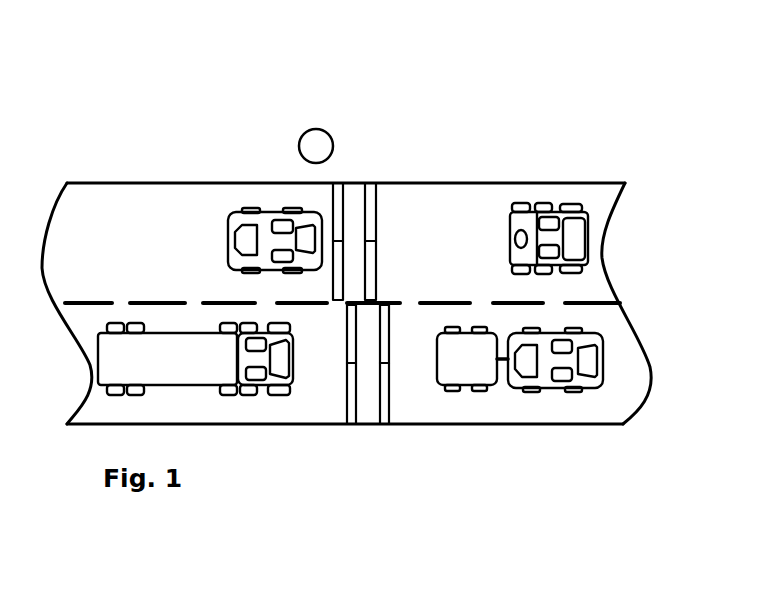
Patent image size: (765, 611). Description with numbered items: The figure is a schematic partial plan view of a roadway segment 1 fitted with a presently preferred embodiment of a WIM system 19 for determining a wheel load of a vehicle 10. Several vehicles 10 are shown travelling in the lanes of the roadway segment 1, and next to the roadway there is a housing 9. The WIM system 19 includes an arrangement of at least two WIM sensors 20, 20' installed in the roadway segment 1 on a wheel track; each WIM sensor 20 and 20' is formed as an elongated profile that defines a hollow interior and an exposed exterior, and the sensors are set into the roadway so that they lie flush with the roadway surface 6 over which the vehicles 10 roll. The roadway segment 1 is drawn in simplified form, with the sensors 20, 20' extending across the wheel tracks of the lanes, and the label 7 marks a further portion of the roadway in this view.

The roadway segment 1 is at (118, 57).
The roadway surface 6 is at (118, 198).
The second road section 7 is at (500, 185).
The housing 9 is at (314, 146).
The vehicle 10 is at (258, 193).
The WIM system 19 is at (333, 90).
The WIM sensor 20 is at (380, 245).
The WIM sensor 20' is at (417, 265).